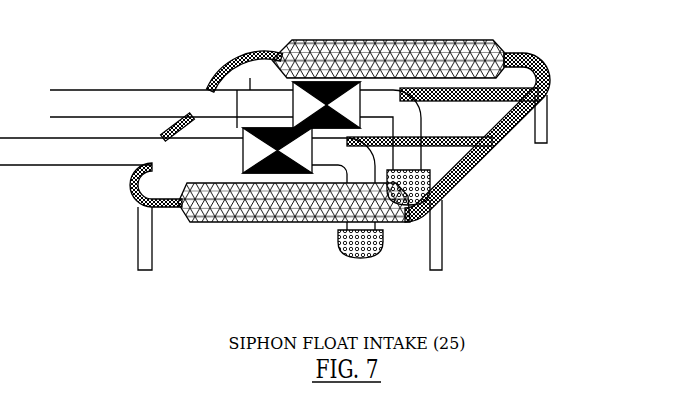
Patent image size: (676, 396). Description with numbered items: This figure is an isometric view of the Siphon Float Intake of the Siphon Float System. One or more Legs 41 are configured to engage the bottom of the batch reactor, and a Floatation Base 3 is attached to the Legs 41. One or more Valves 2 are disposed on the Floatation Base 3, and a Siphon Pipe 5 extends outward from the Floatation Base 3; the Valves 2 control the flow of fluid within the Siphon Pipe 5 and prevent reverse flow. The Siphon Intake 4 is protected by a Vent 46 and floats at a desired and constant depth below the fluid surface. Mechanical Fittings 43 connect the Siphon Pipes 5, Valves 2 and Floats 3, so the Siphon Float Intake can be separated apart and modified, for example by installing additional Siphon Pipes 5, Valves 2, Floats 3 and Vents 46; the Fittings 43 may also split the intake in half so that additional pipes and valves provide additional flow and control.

The valve 2 is at (305, 95).
The floatation base 3 is at (410, 50).
The siphon intake 4 is at (350, 258).
The siphon pipe 5 is at (130, 105).
The leg 41 is at (441, 255).
The mechanical fitting 43 is at (168, 126).
The vent 46 is at (413, 175).